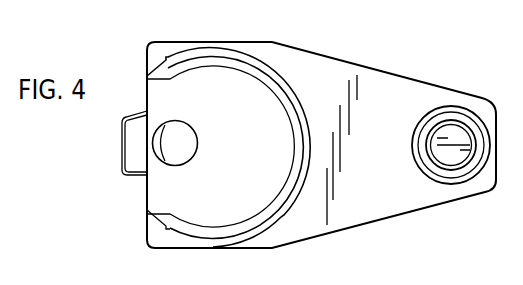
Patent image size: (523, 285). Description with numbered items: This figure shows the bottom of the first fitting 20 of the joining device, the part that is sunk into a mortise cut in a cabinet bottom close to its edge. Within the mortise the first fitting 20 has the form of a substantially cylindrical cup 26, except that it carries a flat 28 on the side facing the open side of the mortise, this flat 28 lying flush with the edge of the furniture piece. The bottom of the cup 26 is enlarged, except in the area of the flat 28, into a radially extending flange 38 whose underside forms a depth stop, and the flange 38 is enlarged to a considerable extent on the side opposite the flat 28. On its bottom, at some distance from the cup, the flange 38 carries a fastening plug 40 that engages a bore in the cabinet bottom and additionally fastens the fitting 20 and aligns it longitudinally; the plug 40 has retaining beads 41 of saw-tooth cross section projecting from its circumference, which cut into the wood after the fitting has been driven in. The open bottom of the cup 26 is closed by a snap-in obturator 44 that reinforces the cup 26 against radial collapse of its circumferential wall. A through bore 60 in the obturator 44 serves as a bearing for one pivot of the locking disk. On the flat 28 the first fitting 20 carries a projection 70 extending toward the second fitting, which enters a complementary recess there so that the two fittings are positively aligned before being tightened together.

The first fitting 20 is at (389, 60).
The cup 26 is at (293, 143).
The flat 28 is at (147, 90).
The flange 38 is at (393, 134).
The fastening plug 40 is at (475, 138).
The retaining beads 41 is at (457, 105).
The snap-in obturator 44 is at (222, 111).
The through bore 60 is at (171, 148).
The projection 70 is at (135, 142).